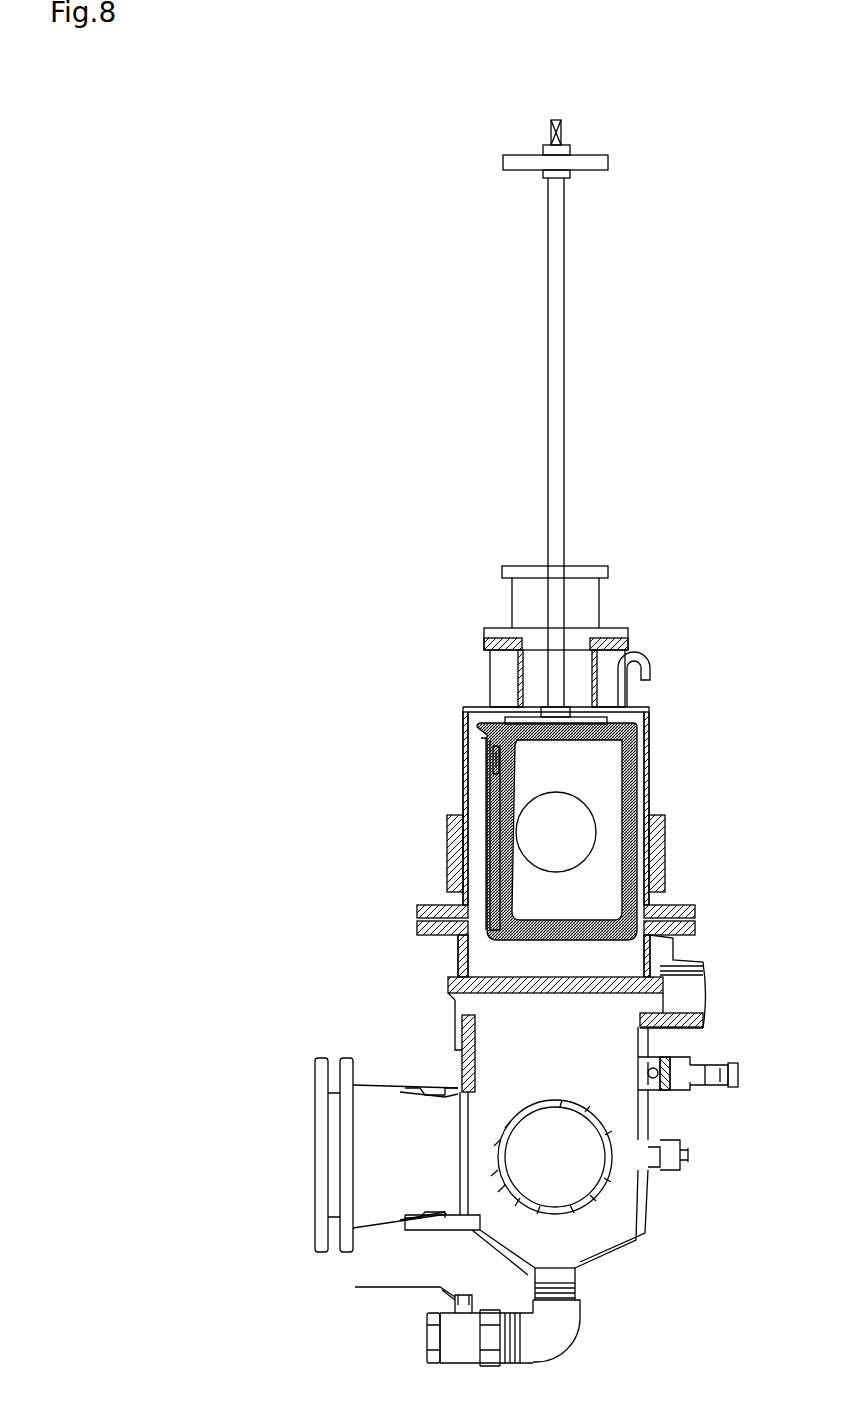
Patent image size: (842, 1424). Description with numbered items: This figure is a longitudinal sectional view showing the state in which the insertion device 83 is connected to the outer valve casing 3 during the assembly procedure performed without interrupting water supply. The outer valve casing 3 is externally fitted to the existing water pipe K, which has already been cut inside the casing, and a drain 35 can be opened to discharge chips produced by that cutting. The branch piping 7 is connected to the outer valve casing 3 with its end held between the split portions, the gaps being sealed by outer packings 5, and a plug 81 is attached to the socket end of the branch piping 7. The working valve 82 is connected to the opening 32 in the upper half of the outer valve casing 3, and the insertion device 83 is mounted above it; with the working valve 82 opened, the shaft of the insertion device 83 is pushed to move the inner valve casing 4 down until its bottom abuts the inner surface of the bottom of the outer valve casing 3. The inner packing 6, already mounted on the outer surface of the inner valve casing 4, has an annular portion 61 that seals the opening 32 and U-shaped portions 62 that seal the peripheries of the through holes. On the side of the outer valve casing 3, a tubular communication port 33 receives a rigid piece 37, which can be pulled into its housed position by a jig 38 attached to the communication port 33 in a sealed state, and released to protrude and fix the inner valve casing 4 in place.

The outer valve casing 3 is at (640, 1228).
The inner valve casing 4 is at (603, 777).
The outer packing 5 is at (652, 1172).
The inner packing 6 is at (666, 851).
The branch piping 7 is at (378, 1083).
The water pipe k is at (540, 1098).
The opening 32 is at (462, 1065).
The communication port 33 is at (667, 1095).
The drain 35 is at (580, 1278).
The piece 37 is at (635, 1068).
The jig 38 is at (712, 1090).
The annular portion 61 is at (465, 735).
The U-shaped portion 62 is at (468, 856).
The plug 81 is at (315, 1125).
The working valve 82 is at (455, 948).
The insertion device 83 is at (463, 773).